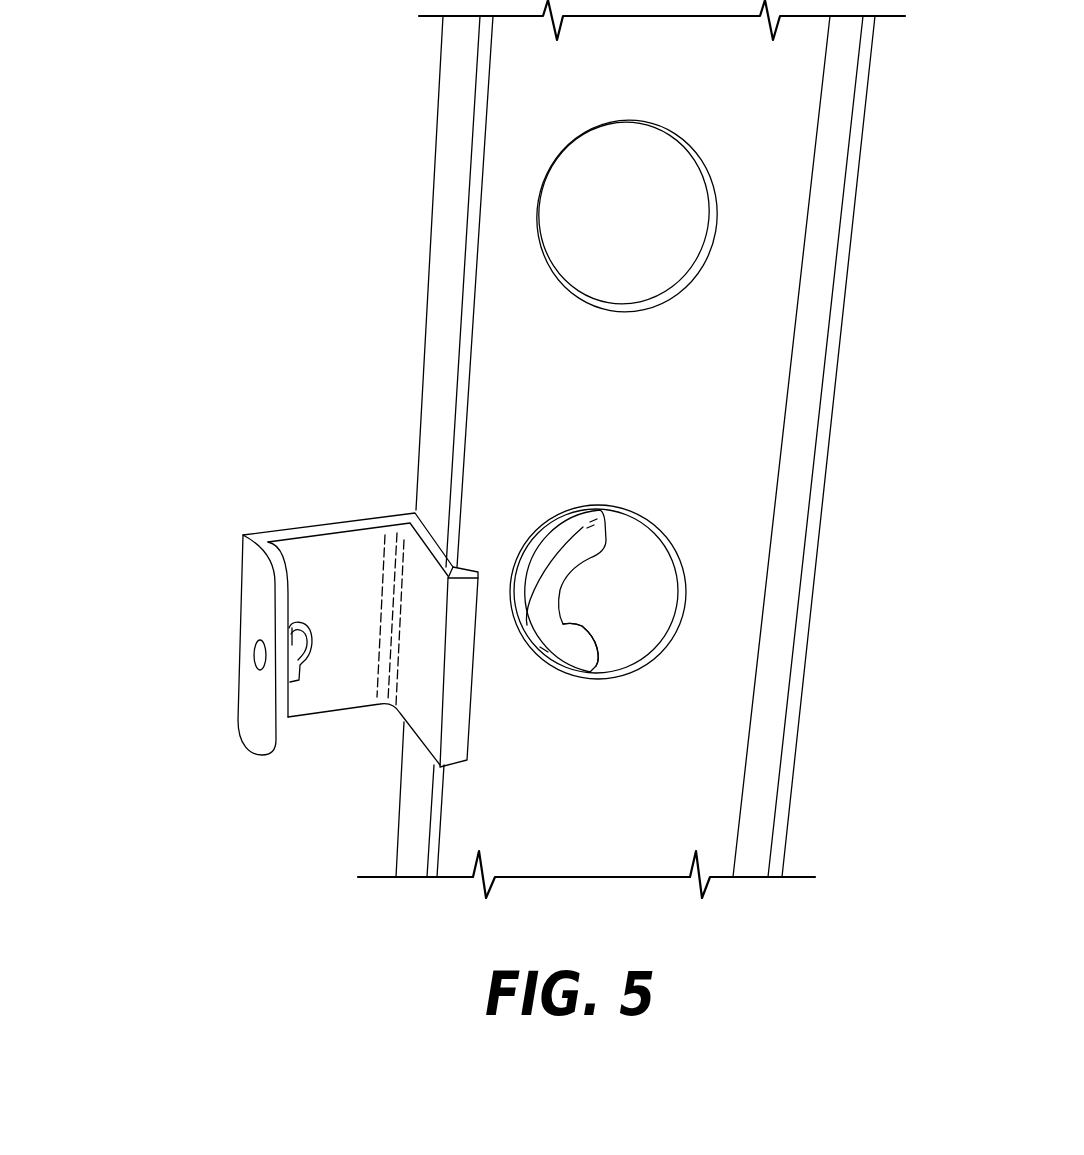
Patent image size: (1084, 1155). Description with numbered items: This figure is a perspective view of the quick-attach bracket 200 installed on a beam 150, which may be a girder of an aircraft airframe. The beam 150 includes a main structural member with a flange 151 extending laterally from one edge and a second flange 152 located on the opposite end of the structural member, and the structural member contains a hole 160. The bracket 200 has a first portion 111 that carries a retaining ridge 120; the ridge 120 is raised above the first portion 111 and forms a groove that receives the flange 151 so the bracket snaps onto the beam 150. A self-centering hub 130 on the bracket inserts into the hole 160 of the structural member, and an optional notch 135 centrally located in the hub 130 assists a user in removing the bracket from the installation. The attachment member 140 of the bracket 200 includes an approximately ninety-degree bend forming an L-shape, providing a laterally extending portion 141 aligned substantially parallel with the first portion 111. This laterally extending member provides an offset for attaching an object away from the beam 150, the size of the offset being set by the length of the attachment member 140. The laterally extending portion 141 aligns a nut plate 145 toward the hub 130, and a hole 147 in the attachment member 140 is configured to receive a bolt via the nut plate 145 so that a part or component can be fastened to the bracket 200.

The first portion 111 is at (415, 690).
The retaining ridge 120 is at (468, 567).
The self-centering hub 130 is at (619, 565).
The notch 135 is at (614, 624).
The attachment member 140 is at (317, 625).
The laterally extending portion 141 is at (194, 645).
The nut plate 145 is at (302, 702).
The hole 147 is at (254, 660).
The beam 150 is at (595, 449).
The flange 151 is at (440, 325).
The second flange 152 is at (837, 285).
The hole 160 is at (686, 566).
The bracket 200 is at (289, 625).